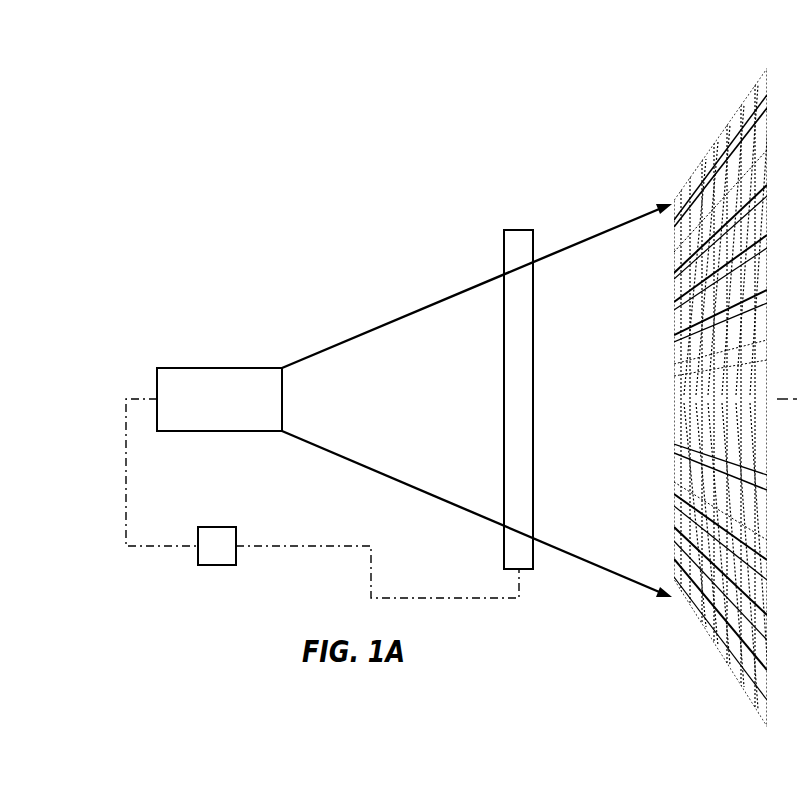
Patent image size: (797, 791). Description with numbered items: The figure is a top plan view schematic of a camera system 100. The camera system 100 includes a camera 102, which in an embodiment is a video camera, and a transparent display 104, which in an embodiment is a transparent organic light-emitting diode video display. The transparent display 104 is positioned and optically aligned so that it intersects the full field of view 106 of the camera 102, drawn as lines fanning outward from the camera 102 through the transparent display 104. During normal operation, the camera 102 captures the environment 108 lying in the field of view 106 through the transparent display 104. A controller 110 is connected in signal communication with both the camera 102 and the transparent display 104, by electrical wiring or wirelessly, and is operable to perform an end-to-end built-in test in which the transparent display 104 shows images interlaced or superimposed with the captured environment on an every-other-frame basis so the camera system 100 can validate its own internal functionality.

The camera system 100 is at (352, 211).
The camera 102 is at (219, 410).
The transparent display 104 is at (507, 247).
The field of view 106 is at (383, 315).
The environment 108 is at (677, 186).
The controller 110 is at (223, 527).